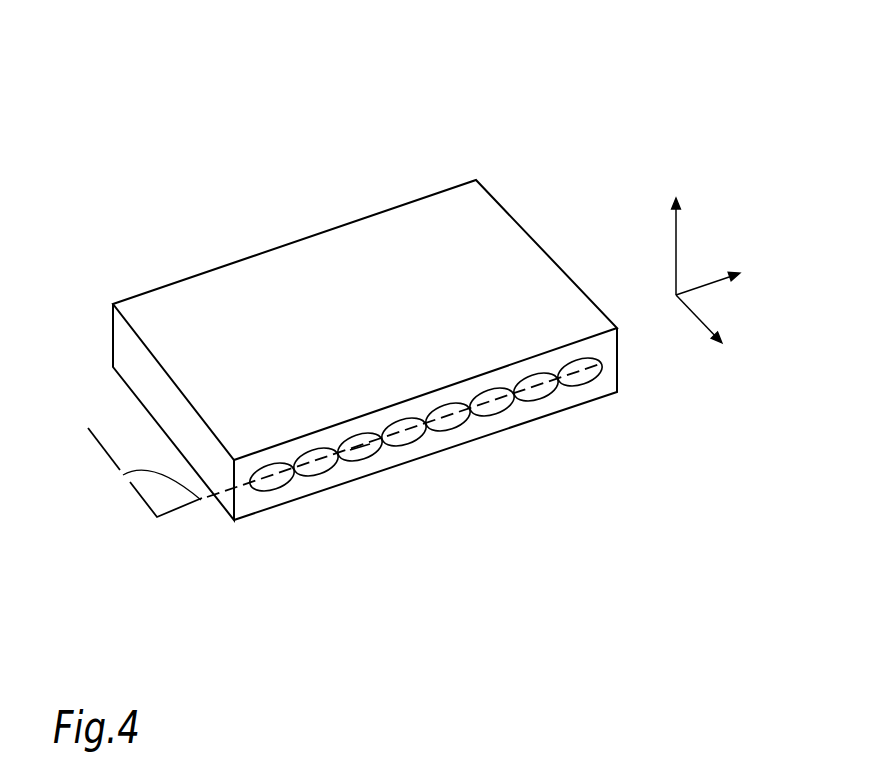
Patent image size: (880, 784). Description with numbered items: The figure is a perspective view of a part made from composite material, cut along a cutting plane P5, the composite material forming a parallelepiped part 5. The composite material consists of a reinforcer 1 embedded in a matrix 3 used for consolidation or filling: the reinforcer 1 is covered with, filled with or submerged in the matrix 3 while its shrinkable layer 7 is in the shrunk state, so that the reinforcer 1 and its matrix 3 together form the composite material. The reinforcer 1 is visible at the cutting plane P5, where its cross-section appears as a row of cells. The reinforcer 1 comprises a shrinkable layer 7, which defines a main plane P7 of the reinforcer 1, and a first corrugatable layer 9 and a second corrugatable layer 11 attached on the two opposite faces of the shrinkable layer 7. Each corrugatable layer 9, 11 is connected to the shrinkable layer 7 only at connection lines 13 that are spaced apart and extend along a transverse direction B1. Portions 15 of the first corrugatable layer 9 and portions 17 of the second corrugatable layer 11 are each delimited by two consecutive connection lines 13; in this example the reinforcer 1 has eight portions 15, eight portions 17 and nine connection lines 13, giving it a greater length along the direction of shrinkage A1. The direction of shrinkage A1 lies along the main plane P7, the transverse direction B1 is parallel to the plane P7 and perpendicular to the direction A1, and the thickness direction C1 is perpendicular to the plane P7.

The reinforcer 1 is at (452, 429).
The matrix 3 is at (535, 372).
The parallelepiped part 5 is at (353, 198).
The shrinkable layer 7 is at (368, 446).
The first corrugatable layer 9 is at (479, 392).
The second corrugatable layer 11 is at (407, 445).
The connection lines 13 is at (294, 470).
The portions of the first corrugatable layer 15 is at (360, 437).
The portions of the second corrugatable layer 17 is at (322, 475).
The cutting plane P5 is at (587, 392).
The main plane of the reinforcer P7 is at (145, 472).
The direction of shrinkage A1 is at (725, 280).
The transverse direction B1 is at (701, 336).
The thickness direction C1 is at (691, 246).